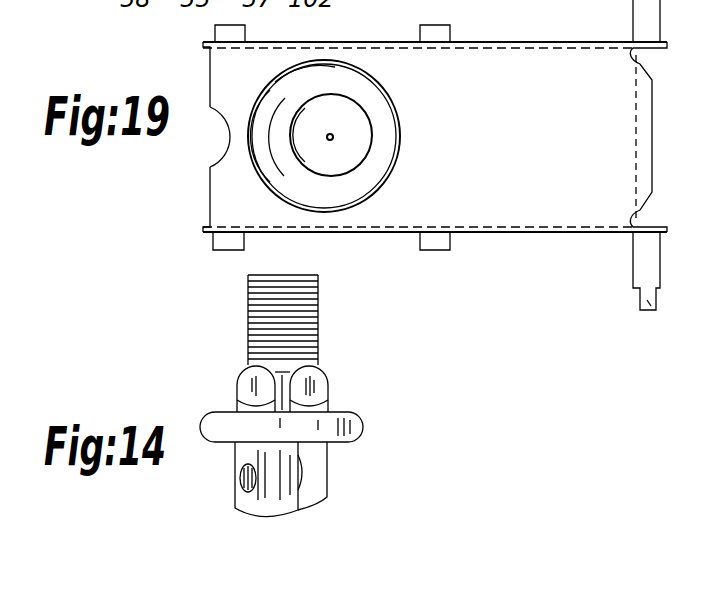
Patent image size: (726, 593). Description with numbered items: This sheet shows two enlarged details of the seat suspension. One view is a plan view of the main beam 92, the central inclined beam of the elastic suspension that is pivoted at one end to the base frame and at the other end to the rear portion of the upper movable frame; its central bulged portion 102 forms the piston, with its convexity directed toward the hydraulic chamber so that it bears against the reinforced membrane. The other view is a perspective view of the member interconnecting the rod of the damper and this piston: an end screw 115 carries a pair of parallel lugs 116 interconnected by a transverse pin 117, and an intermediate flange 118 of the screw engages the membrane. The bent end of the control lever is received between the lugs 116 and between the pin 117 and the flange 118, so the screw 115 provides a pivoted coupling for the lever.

In FIG. 19, the main beam 92 is at (435, 155).
In FIG. 19, the central bulged portion 102 is at (347, 153).
In FIG. 14, the end screw 115 is at (327, 333).
In FIG. 14, the parallel lugs 116 is at (316, 490).
In FIG. 14, the transverse pin 117 is at (240, 478).
In FIG. 14, the intermediate flange 118 is at (214, 420).